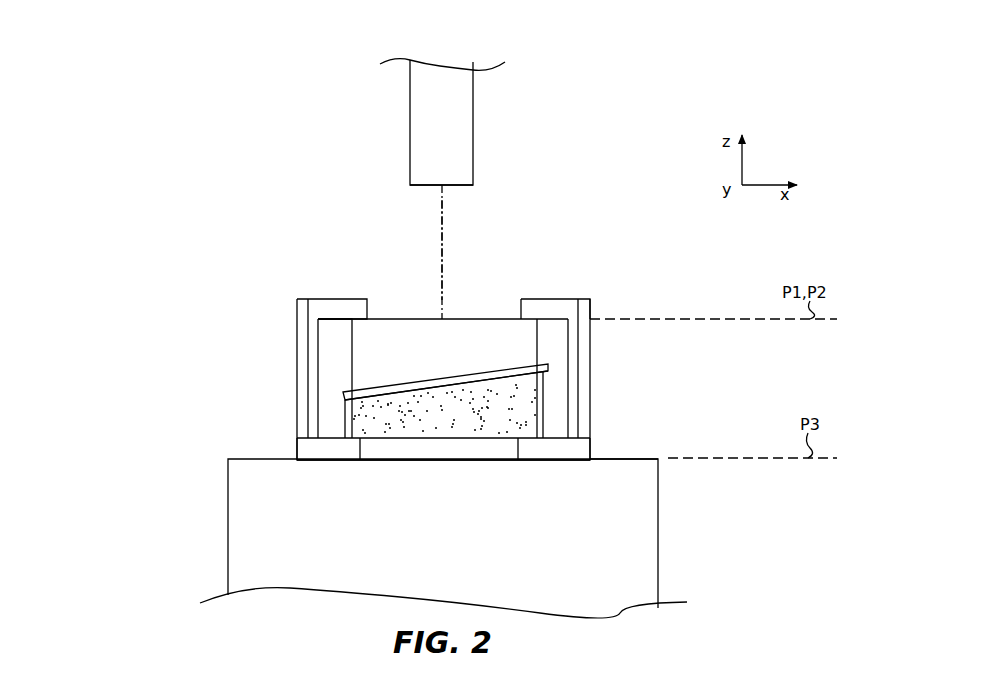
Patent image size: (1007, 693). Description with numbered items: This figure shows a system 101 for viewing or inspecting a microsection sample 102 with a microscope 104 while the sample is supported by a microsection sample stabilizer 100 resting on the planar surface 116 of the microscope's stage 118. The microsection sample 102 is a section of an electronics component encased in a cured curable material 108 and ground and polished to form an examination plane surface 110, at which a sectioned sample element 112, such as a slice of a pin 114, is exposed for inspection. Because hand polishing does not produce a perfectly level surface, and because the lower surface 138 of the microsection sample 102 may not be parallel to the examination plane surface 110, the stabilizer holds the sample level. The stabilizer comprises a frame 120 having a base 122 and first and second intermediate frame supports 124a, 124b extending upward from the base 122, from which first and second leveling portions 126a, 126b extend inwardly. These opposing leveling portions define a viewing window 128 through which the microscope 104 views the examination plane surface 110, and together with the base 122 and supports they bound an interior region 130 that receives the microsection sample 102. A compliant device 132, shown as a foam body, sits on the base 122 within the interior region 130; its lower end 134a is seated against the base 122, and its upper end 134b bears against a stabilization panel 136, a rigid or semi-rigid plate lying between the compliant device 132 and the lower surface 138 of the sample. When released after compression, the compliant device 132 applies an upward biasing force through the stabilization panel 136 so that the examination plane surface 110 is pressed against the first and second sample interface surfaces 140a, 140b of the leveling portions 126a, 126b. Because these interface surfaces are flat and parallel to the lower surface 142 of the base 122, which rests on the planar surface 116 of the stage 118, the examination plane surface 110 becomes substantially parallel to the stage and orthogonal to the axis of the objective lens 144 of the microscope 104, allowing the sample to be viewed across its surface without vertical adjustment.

The microsection sample stabilizer 100 is at (243, 243).
The system 101 is at (212, 128).
The microsection sample 102 is at (424, 334).
The microscope 104 is at (462, 113).
The curable material 108 is at (397, 333).
The examination plane surface 110 is at (505, 308).
The sectioned sample element 112 is at (445, 310).
The pin 114 is at (465, 250).
The planar surface 116 is at (630, 452).
The stage 118 is at (660, 490).
The frame 120 is at (450, 338).
The base 122 is at (323, 448).
The first intermediate frame support 124a is at (297, 352).
The second intermediate frame support 124b is at (590, 343).
The first leveling portion 126a is at (337, 300).
The second leveling portion 126b is at (565, 298).
The viewing window 128 is at (487, 288).
The interior region 130 is at (400, 390).
The compliant device 132 is at (540, 440).
The lower end of compliant device 134a is at (497, 440).
The upper end of compliant device 134b is at (430, 440).
The stabilization panel 136 is at (323, 410).
The lower surface of microsection sample 138 is at (398, 400).
The first sample interface surface 140a is at (337, 327).
The second sample interface surface 140b is at (553, 327).
The lower surface of base 142 is at (348, 465).
The objective lens 144 is at (460, 160).